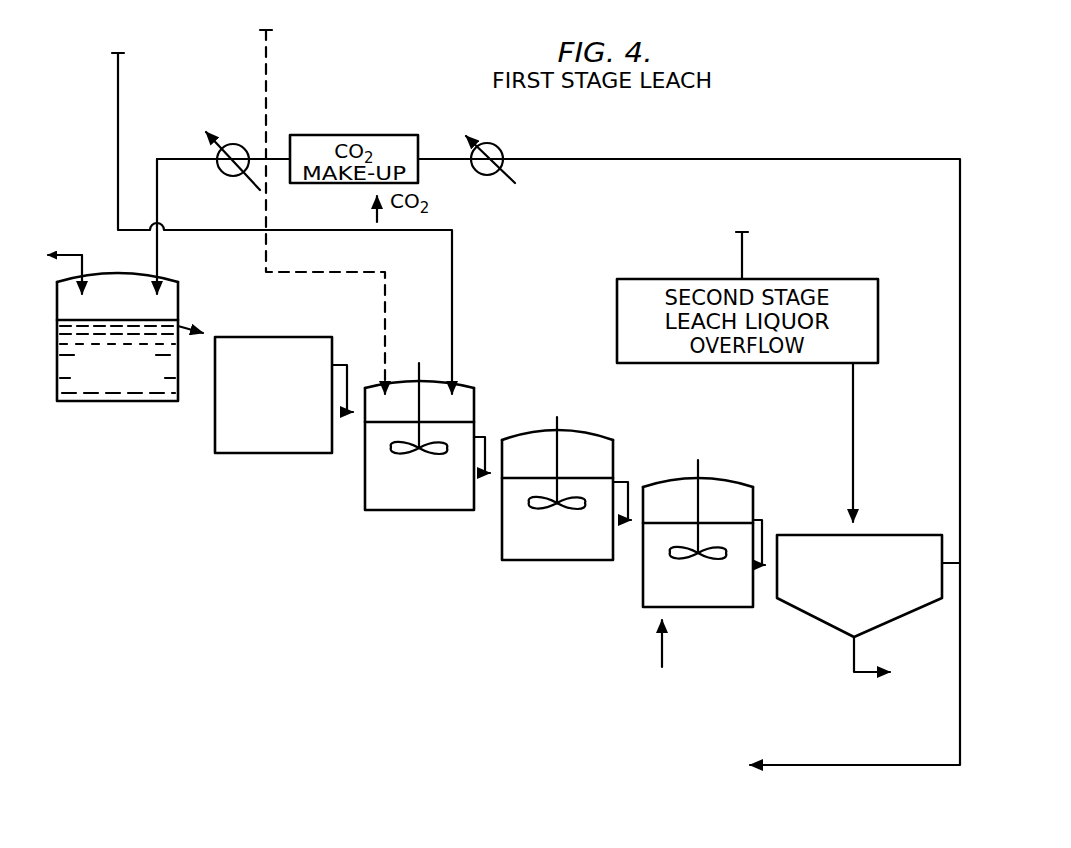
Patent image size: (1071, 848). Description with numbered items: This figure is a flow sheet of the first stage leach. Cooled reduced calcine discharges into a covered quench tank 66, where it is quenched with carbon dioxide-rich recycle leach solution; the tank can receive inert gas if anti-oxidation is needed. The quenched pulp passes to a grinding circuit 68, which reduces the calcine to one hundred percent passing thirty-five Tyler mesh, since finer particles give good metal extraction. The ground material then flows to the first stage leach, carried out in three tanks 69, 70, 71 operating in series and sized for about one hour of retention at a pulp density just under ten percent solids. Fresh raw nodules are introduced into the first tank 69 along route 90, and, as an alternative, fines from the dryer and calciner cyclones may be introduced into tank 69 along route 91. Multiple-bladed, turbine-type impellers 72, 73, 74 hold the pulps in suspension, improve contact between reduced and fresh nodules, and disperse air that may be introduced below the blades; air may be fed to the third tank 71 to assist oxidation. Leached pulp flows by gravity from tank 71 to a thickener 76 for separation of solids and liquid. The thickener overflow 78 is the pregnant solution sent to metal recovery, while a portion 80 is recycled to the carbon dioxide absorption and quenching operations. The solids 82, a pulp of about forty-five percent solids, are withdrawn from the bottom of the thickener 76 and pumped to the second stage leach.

The quench tank 66 is at (121, 414).
The grinding circuit 68 is at (311, 345).
The first leach tank 69 is at (403, 426).
The second leach tank 70 is at (566, 474).
The third leach tank 71 is at (695, 564).
The impeller 72 is at (394, 449).
The impeller 73 is at (583, 500).
The impeller 74 is at (718, 548).
The thickener 76 is at (818, 616).
The overflow 78 is at (960, 656).
The recycled portion 80 is at (879, 159).
The solids 82 is at (852, 655).
The route 90 is at (121, 93).
The route 91 is at (268, 63).